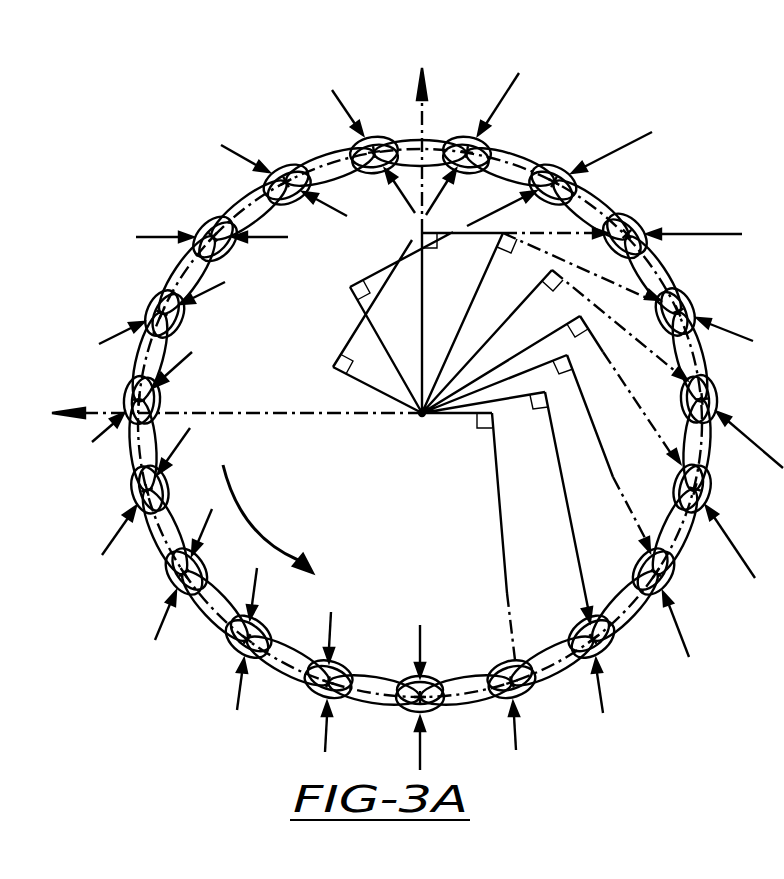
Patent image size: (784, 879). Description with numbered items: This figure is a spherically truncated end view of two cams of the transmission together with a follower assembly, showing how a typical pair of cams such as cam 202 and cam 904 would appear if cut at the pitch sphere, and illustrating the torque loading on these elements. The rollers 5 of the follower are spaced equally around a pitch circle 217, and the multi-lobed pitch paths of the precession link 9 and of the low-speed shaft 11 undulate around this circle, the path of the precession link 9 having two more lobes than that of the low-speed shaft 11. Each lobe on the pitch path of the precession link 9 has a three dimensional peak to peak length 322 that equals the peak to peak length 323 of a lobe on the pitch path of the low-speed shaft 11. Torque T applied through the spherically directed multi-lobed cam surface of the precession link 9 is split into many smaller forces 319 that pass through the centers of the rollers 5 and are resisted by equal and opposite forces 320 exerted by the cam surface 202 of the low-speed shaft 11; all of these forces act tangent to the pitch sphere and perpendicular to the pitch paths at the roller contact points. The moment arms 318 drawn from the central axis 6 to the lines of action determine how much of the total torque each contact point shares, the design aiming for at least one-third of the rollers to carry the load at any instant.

The roller 5 is at (343, 665).
The central axis 6 is at (423, 417).
The precession link 9 is at (273, 685).
The low-speed shaft 11 is at (378, 534).
The spherically directed multi-lobed cam surface of the low-speed shaft 202 is at (158, 547).
The pitch circle 217 is at (640, 647).
The moment arms 318 is at (377, 393).
The forces 319 is at (685, 637).
The forces 320 is at (627, 513).
The peak to peak length 322 is at (393, 439).
The peak to peak length 323 is at (420, 422).
The cam 904 is at (205, 612).